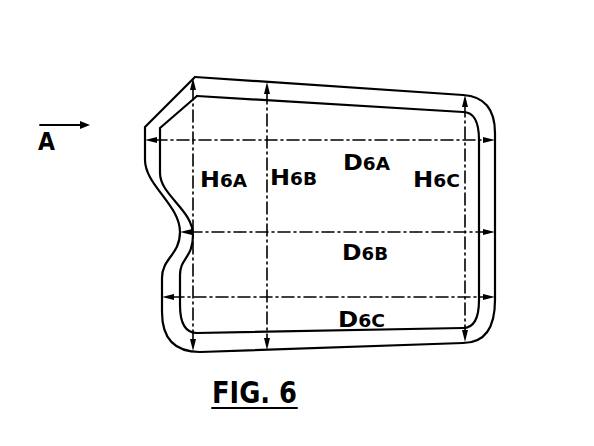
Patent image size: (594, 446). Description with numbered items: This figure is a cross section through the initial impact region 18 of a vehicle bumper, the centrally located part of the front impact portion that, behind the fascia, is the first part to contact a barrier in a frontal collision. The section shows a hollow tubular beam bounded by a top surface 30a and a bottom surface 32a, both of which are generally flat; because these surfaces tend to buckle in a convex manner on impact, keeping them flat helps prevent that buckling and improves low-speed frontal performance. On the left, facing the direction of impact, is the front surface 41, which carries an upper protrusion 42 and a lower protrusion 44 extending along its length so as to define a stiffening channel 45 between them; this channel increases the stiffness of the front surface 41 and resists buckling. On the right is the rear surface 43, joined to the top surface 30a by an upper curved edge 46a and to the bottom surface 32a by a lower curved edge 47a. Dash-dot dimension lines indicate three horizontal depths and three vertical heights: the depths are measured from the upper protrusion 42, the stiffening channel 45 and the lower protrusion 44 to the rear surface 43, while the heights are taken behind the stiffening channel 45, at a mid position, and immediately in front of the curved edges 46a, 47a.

The initial impact region 18 is at (522, 187).
The top surface 30a is at (336, 78).
The bottom surface 32a is at (338, 362).
The front surface 41 is at (127, 214).
The upper protrusion 42 is at (143, 151).
The rear surface 43 is at (503, 153).
The lower protrusion 44 is at (163, 300).
The stiffening channel 45 is at (170, 232).
The upper curved edge 46a is at (485, 103).
The lower curved edge 47a is at (482, 333).